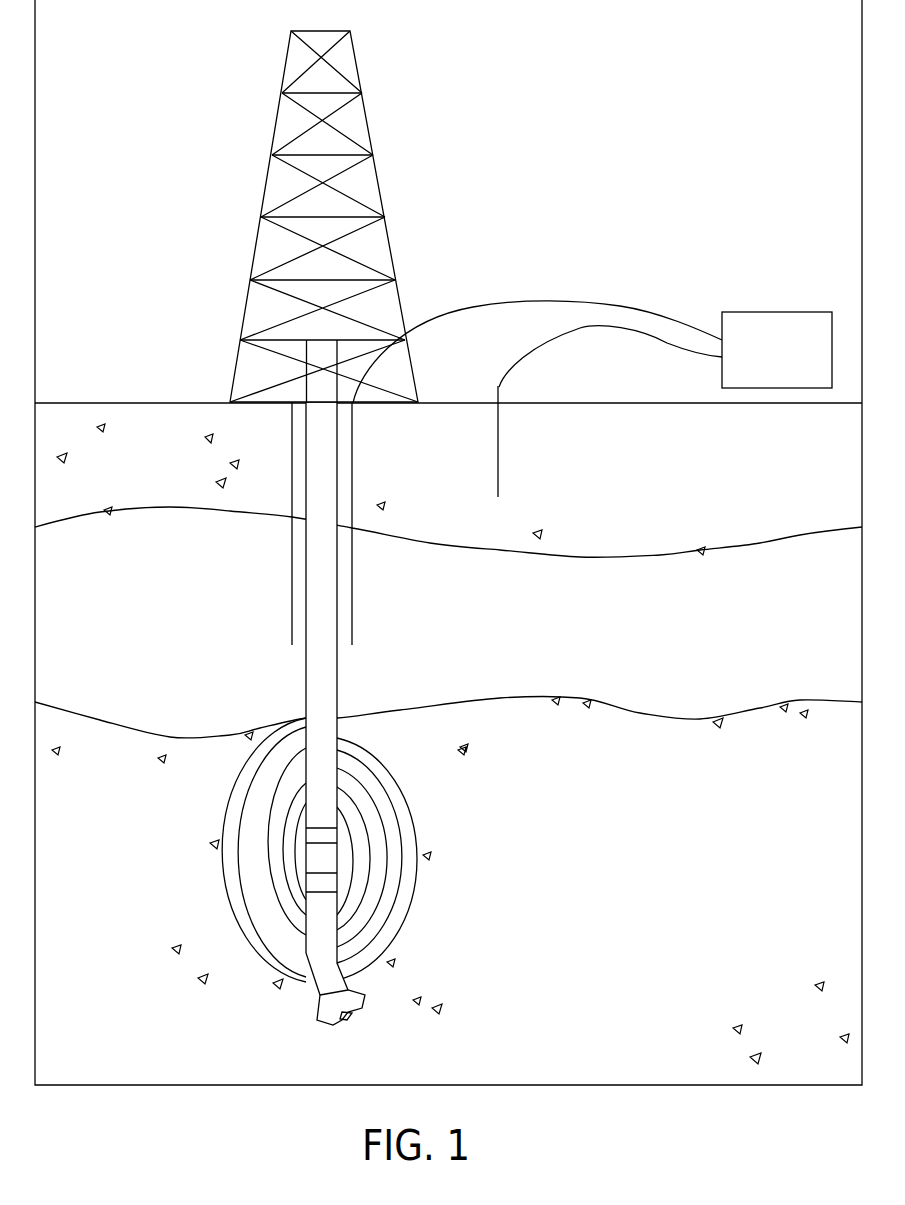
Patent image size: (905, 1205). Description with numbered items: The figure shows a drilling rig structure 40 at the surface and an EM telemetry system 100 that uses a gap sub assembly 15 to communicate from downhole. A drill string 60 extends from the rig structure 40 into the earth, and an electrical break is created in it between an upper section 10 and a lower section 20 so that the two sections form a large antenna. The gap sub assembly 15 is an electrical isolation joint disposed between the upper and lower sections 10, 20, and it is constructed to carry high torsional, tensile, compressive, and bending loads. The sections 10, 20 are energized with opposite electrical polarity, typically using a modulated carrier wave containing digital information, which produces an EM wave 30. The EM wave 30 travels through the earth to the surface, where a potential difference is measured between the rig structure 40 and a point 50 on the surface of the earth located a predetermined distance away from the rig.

The upper section 10 is at (337, 683).
The gap sub assembly 15 is at (305, 862).
The lower section 20 is at (313, 993).
The EM wave 30 is at (420, 867).
The drilling rig structure 40 is at (400, 342).
The point on the surface of the earth 50 is at (500, 392).
The drill string 60 is at (263, 735).
The EM telemetry system 100 is at (360, 850).